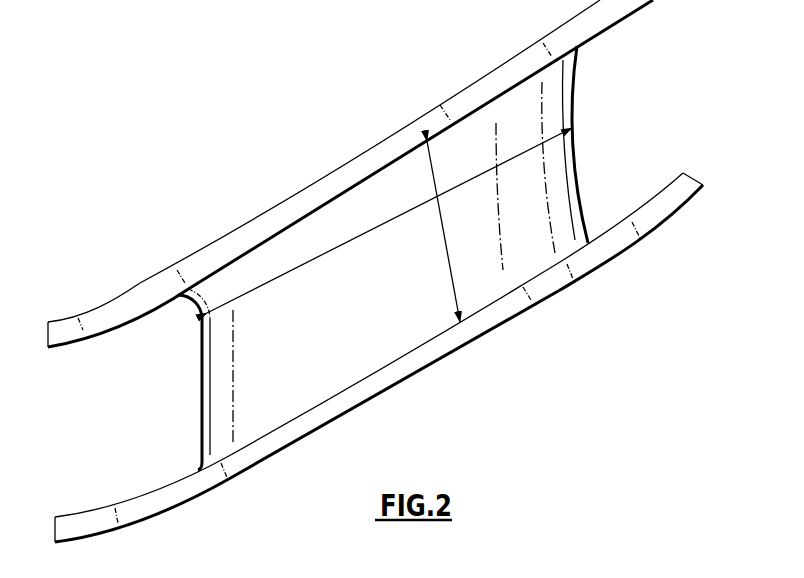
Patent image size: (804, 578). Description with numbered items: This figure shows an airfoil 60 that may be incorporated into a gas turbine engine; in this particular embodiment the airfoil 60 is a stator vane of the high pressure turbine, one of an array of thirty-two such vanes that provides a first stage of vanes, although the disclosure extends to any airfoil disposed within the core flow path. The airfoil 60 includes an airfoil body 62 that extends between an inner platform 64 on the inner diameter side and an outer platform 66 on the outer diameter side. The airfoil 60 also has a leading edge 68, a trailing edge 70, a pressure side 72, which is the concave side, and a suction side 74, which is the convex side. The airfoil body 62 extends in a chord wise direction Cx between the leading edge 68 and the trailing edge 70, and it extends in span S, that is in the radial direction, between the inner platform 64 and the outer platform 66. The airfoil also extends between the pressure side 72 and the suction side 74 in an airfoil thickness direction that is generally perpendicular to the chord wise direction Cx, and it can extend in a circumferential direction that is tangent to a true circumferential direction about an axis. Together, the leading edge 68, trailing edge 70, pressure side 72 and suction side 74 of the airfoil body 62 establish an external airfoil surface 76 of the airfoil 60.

The airfoil 60 is at (247, 109).
The airfoil body 62 is at (534, 106).
The inner platform 64 is at (505, 316).
The outer platform 66 is at (398, 140).
The leading edge 68 is at (203, 378).
The trailing edge 70 is at (577, 168).
The pressure side 72 is at (223, 405).
The suction side 74 is at (184, 330).
The external airfoil surface 76 is at (340, 323).
The span S is at (447, 238).
The chord wise direction Cx is at (357, 237).